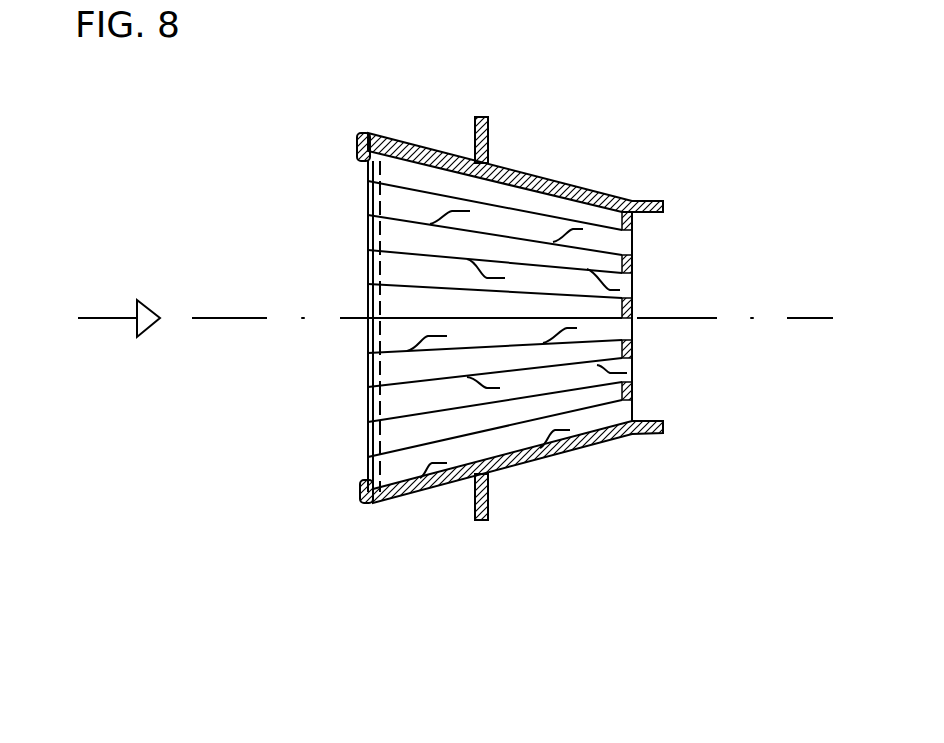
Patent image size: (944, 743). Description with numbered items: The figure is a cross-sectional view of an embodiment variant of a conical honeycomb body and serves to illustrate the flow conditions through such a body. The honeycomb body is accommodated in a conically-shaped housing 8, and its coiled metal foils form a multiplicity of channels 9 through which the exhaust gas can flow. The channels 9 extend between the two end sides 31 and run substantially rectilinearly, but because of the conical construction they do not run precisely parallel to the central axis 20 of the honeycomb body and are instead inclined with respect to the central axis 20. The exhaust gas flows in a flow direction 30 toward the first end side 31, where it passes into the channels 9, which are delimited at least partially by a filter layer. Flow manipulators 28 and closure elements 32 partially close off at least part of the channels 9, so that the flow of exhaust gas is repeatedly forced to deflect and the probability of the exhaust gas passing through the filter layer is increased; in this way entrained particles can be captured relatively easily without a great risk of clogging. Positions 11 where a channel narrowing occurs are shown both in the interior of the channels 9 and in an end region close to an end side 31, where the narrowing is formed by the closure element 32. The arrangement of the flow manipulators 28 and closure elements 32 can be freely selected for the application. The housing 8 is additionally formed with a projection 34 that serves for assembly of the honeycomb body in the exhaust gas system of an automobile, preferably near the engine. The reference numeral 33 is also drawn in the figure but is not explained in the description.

The housing 8 is at (657, 201).
The channels 9 is at (375, 206).
The positions 11 is at (424, 530).
The central axis 20 is at (266, 320).
The flow manipulators 28 is at (562, 230).
The flow direction 30 is at (113, 322).
The end side 31 is at (368, 266).
The closure elements 32 is at (632, 227).
The plate inner layer 33 is at (362, 452).
The projection 34 is at (480, 116).